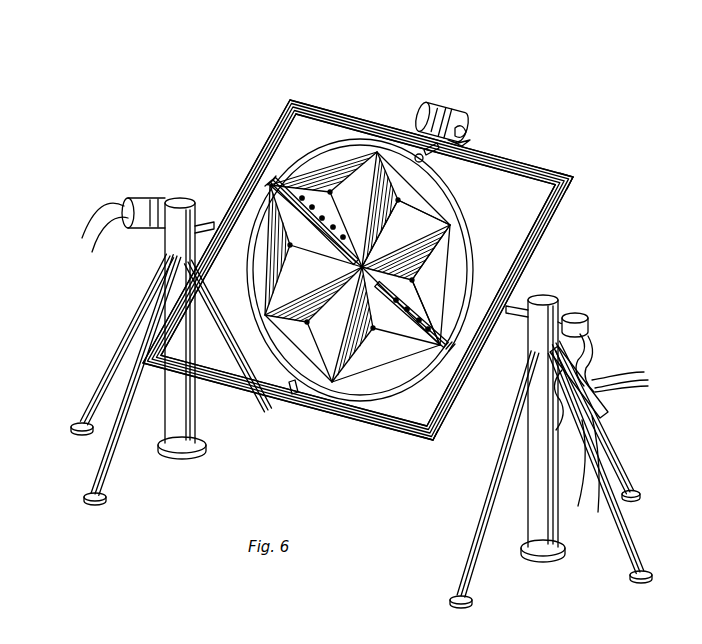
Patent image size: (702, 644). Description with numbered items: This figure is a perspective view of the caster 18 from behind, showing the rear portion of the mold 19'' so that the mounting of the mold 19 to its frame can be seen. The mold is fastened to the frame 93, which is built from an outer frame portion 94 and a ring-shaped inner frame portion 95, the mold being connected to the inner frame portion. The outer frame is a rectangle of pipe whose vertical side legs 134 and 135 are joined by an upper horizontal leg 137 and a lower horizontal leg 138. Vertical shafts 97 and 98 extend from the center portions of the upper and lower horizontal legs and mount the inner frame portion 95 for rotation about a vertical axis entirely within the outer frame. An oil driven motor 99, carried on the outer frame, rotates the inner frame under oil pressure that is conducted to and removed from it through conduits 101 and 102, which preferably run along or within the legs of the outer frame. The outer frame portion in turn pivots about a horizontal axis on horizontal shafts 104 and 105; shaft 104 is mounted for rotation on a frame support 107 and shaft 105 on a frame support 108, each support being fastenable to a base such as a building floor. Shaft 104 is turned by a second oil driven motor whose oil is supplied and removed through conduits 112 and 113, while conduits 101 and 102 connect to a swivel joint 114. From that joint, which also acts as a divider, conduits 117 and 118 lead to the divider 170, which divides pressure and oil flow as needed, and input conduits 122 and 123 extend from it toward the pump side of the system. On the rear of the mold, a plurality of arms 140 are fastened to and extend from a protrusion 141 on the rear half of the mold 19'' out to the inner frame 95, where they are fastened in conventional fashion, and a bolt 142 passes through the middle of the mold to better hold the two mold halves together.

The target apparatus 18 is at (570, 70).
The mold 19 is at (378, 267).
The rear portion of the mold 19'' is at (460, 285).
The frame 93 is at (348, 90).
The outer frame portion 94 is at (580, 216).
The inner frame portion 95 is at (412, 386).
The shaft 97 is at (428, 154).
The shaft 98 is at (292, 408).
The oil driven motor 99 is at (448, 104).
The conduit 101 is at (466, 122).
The conduit 102 is at (466, 136).
The shaft 104 is at (204, 226).
The shaft 105 is at (532, 302).
The frame support 107 is at (166, 244).
The frame support 108 is at (532, 354).
The conduit 112 is at (78, 218).
The conduit 113 is at (92, 254).
The swivel joint 114 is at (590, 316).
The conduit 117 is at (556, 426).
The conduit 118 is at (592, 372).
The input conduit 122 is at (580, 508).
The input conduit 123 is at (598, 532).
The vertical side leg 134 is at (262, 146).
The vertical side leg 135 is at (448, 426).
The upper horizontal leg 137 is at (540, 166).
The lower horizontal leg 138 is at (364, 440).
The arm 140 is at (288, 200).
The protrusion 141 is at (318, 246).
The bolt 142 is at (382, 252).
The cable housing 170 is at (600, 402).